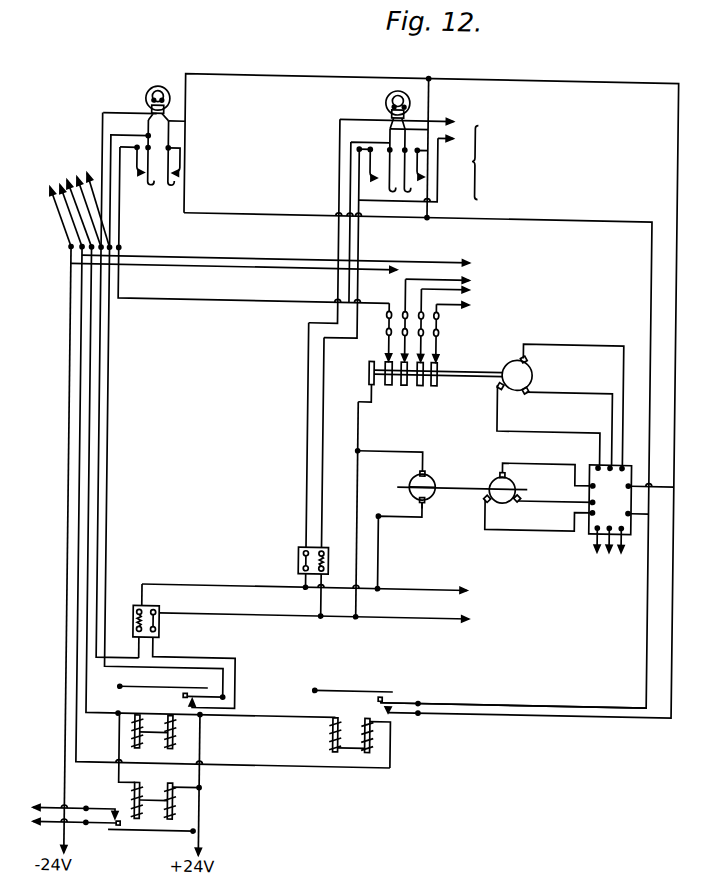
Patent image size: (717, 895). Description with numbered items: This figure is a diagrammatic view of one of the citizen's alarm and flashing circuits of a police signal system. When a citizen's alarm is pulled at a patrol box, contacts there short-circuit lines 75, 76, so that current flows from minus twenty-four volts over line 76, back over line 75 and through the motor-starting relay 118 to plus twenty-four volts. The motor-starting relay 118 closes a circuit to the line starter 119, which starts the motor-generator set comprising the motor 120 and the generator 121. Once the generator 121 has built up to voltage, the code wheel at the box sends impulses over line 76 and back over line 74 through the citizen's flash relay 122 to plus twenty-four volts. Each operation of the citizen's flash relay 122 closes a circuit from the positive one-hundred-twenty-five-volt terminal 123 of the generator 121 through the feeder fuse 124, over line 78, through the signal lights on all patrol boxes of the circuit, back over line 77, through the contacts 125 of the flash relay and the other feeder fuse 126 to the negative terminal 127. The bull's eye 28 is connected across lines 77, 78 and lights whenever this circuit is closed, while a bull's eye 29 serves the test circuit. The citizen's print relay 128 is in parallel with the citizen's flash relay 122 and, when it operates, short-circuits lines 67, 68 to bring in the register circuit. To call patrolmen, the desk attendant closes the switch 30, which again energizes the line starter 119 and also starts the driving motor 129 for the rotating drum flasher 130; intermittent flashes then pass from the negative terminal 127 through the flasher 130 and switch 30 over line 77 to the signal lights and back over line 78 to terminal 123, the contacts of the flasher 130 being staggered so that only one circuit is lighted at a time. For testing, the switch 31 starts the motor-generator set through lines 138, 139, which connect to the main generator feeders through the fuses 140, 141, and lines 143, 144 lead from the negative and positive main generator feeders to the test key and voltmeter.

The bull's eye 28 is at (159, 83).
The bull's eye 29 is at (399, 83).
The switch 30 is at (145, 179).
The switch 31 is at (434, 161).
The line 67 is at (58, 821).
The line 68 is at (48, 806).
The line 74 is at (69, 178).
The line 75 is at (61, 184).
The line 76 is at (51, 186).
The line 77 is at (89, 171).
The line 78 is at (79, 176).
The motor-starting relay 118 is at (378, 724).
The line starter 119 is at (604, 506).
The motor 120 is at (505, 463).
The generator 121 is at (433, 474).
The citizen's flash relay 122 is at (184, 728).
The positive 125-volt terminal 123 is at (429, 497).
The feeder fuse 124 is at (139, 608).
The contacts 125 is at (191, 692).
The feeder fuse 126 is at (168, 619).
The negative 125-volt terminal 127 is at (433, 461).
The citizen's print relay 128 is at (182, 796).
The driving motor 129 is at (528, 333).
The rotating drum flasher 130 is at (374, 360).
The line 138 is at (312, 429).
The line 139 is at (328, 403).
The fuse 140 is at (305, 547).
The fuse 141 is at (329, 542).
The line 143 is at (453, 111).
The line 144 is at (456, 128).